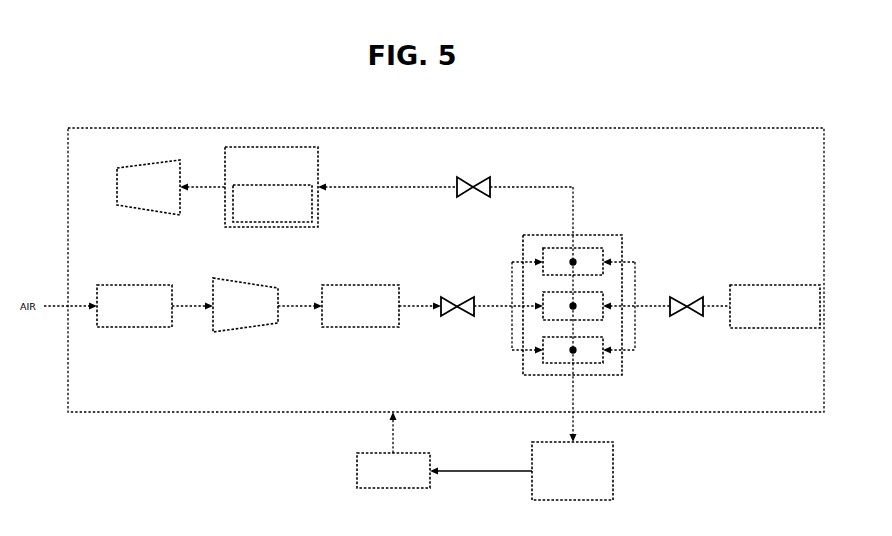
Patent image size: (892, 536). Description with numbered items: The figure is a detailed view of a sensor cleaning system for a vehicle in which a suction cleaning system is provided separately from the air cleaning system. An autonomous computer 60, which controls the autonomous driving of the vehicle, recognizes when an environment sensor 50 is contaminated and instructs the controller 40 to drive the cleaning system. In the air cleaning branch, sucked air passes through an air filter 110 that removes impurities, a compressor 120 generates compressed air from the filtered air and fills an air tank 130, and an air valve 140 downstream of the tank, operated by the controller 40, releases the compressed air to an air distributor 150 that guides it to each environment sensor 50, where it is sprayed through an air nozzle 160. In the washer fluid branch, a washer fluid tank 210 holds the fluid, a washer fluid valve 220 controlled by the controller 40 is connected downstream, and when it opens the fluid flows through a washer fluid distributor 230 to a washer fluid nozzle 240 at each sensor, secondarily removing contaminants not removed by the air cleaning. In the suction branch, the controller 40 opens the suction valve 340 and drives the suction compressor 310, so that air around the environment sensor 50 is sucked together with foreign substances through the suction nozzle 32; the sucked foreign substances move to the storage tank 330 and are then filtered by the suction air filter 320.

The suction nozzle 32 is at (571, 260).
The controller 40 is at (356, 471).
The environment sensor 50 is at (623, 368).
The autonomous computer 60 is at (614, 471).
The air filter 110 is at (134, 328).
The compressor 120 is at (244, 330).
The air tank 130 is at (360, 284).
The air valve 140 is at (455, 297).
The air distributor 150 is at (511, 340).
The air nozzle 160 is at (541, 358).
The washer fluid tank 210 is at (776, 284).
The washer fluid valve 220 is at (693, 298).
The washer fluid distributor 230 is at (636, 262).
The washer fluid nozzle 240 is at (606, 250).
The suction compressor 310 is at (142, 167).
The suction air filter 320 is at (313, 202).
The storage tank 330 is at (270, 146).
The suction valve 340 is at (470, 180).